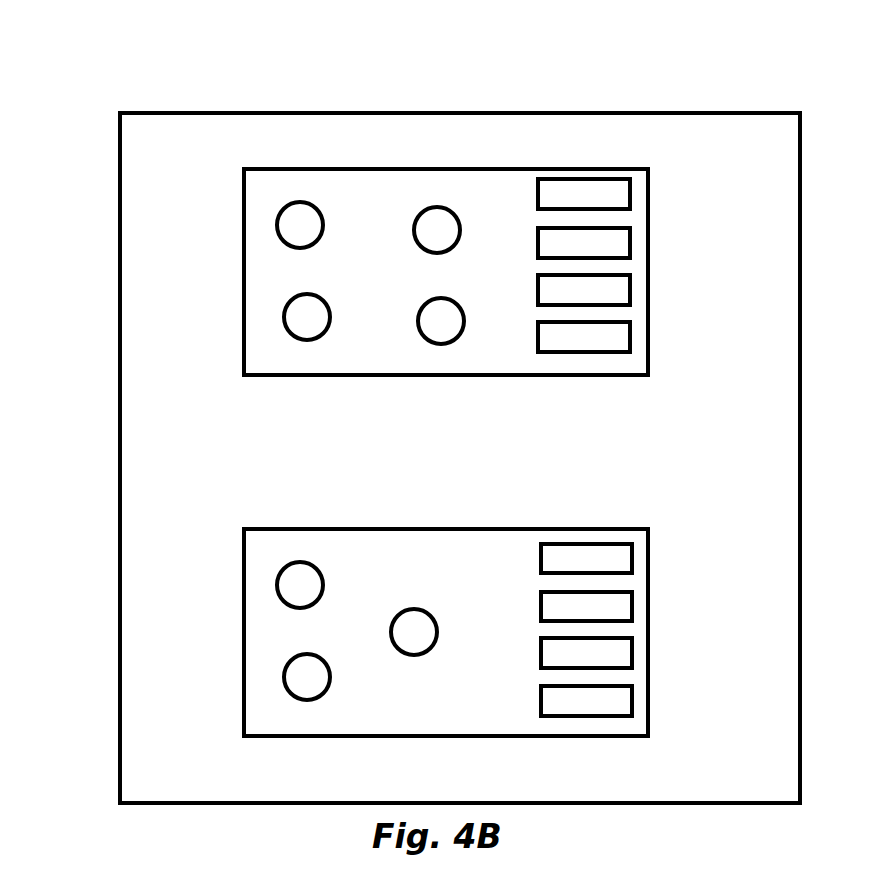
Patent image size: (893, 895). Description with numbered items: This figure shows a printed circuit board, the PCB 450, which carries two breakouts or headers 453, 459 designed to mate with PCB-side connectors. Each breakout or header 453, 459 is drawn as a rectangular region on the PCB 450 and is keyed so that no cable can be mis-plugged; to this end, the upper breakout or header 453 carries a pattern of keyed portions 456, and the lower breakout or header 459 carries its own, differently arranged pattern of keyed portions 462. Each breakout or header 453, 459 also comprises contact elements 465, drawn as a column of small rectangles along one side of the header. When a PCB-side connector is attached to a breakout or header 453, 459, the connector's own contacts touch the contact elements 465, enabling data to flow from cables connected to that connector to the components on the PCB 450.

The PCB 450 is at (800, 92).
The breakout or header 453 is at (320, 170).
The keyed portions 456 is at (283, 317).
The breakout or header 459 is at (320, 533).
The keyed portions 462 is at (283, 680).
The contact elements 465 is at (538, 190).